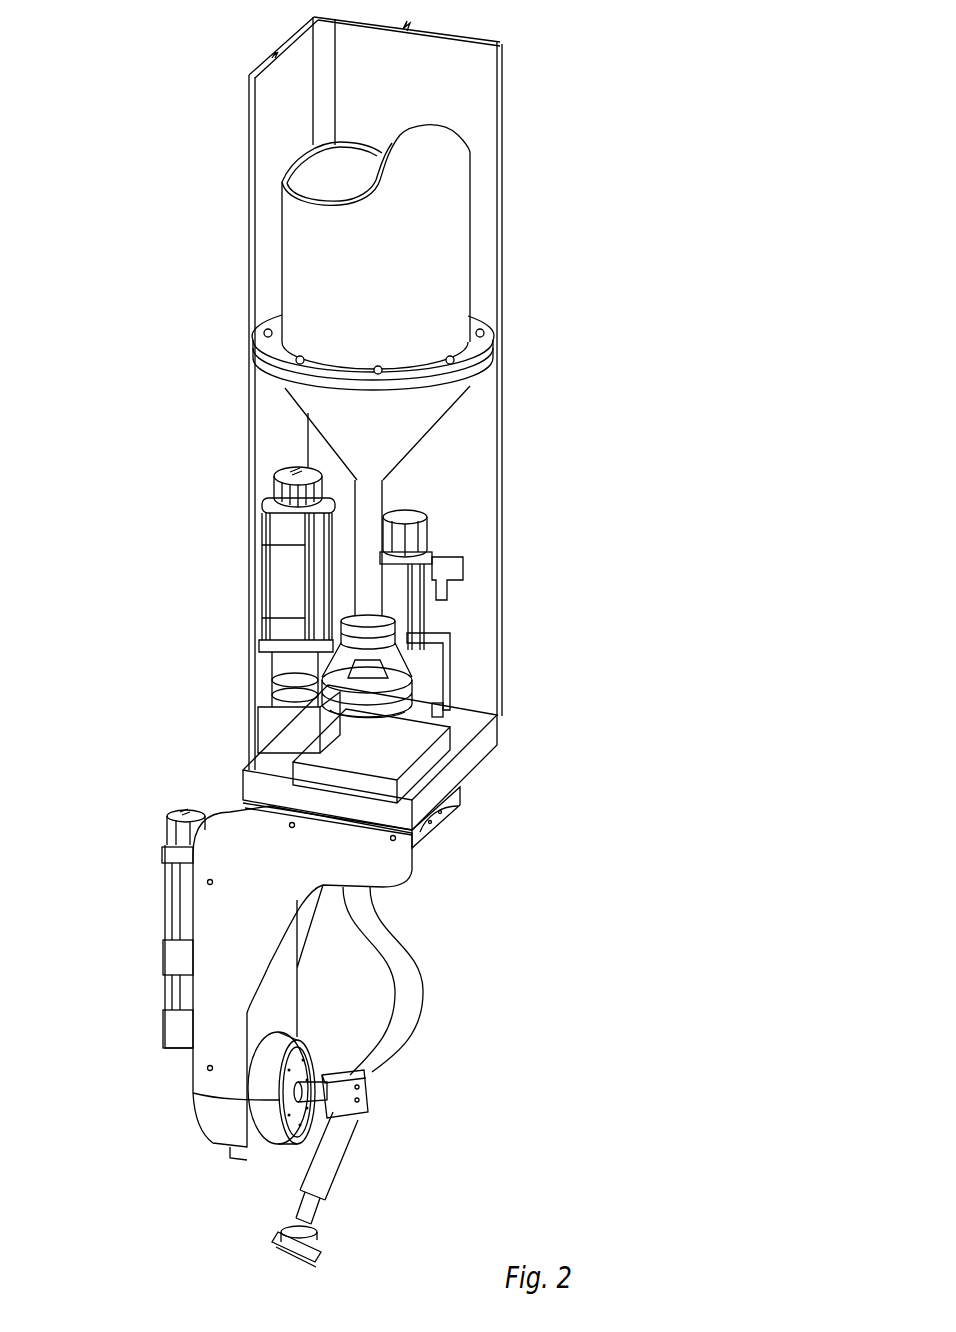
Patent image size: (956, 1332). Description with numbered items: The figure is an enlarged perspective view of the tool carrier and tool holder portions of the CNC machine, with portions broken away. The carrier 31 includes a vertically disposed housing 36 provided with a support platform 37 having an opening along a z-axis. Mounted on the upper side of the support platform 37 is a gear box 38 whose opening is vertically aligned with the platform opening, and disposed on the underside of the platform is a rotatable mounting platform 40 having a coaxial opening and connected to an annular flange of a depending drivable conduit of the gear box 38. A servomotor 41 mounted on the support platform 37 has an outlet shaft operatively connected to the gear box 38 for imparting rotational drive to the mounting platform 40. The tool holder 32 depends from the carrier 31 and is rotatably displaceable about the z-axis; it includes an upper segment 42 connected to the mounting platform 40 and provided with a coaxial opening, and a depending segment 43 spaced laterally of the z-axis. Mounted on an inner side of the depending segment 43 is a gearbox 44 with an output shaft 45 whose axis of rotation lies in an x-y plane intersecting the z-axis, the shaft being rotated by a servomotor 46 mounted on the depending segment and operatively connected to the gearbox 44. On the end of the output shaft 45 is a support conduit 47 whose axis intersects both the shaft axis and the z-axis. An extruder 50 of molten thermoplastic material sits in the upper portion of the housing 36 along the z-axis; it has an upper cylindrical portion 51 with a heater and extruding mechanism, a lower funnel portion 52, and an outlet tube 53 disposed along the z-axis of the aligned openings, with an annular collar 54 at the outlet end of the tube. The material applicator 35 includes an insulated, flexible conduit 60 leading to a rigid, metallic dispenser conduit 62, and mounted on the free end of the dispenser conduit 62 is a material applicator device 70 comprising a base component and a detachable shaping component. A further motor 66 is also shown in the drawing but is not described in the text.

The carrier 31 is at (503, 403).
The tool holder 32 is at (166, 1064).
The material applicator 35 is at (413, 1058).
The housing 36 is at (500, 175).
The support platform 37 is at (500, 728).
The gear box 38 is at (296, 757).
The rotatable mounting platform 40 is at (462, 790).
The servomotor 41 is at (280, 560).
The upper segment 42 is at (393, 862).
The depending segment 43 is at (200, 920).
The gearbox 44 is at (300, 1085).
The output shaft 45 is at (270, 1155).
The servomotor 46 is at (203, 830).
The support conduit 47 is at (360, 1100).
The extruder 50 is at (468, 260).
The upper cylindrical portion 51 is at (297, 236).
The lower funnel portion 52 is at (312, 407).
The outlet tube 53 is at (372, 497).
The annular collar 54 is at (410, 640).
The flexible conduit 60 is at (418, 960).
The dispenser conduit 62 is at (345, 1160).
The auxiliary motor 66 is at (440, 560).
The material applicator device 70 is at (320, 1250).